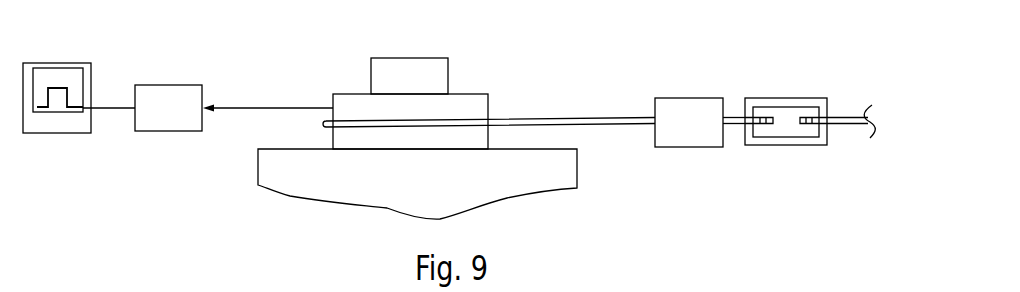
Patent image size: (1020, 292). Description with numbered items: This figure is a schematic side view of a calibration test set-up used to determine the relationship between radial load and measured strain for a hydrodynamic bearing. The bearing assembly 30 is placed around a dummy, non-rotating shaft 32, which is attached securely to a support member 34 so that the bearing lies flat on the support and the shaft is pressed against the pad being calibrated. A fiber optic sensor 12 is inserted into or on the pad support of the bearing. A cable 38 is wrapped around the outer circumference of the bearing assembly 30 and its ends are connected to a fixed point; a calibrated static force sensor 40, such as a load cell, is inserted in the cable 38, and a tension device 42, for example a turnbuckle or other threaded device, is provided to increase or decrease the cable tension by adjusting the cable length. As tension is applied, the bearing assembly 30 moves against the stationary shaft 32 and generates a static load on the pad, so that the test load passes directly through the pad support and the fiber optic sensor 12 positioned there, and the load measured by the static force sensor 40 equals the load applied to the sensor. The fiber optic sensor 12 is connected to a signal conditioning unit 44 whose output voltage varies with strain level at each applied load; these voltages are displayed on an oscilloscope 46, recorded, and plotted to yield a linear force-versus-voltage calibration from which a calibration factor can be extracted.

The fiber optic sensor 12 is at (262, 106).
The bearing assembly 30 is at (471, 93).
The non-rotating shaft 32 is at (410, 63).
The support member 34 is at (262, 167).
The cable 38 is at (568, 121).
The static force sensor 40 is at (693, 140).
The tension device 42 is at (785, 110).
The signal conditioning unit 44 is at (173, 127).
The oscilloscope 46 is at (62, 128).